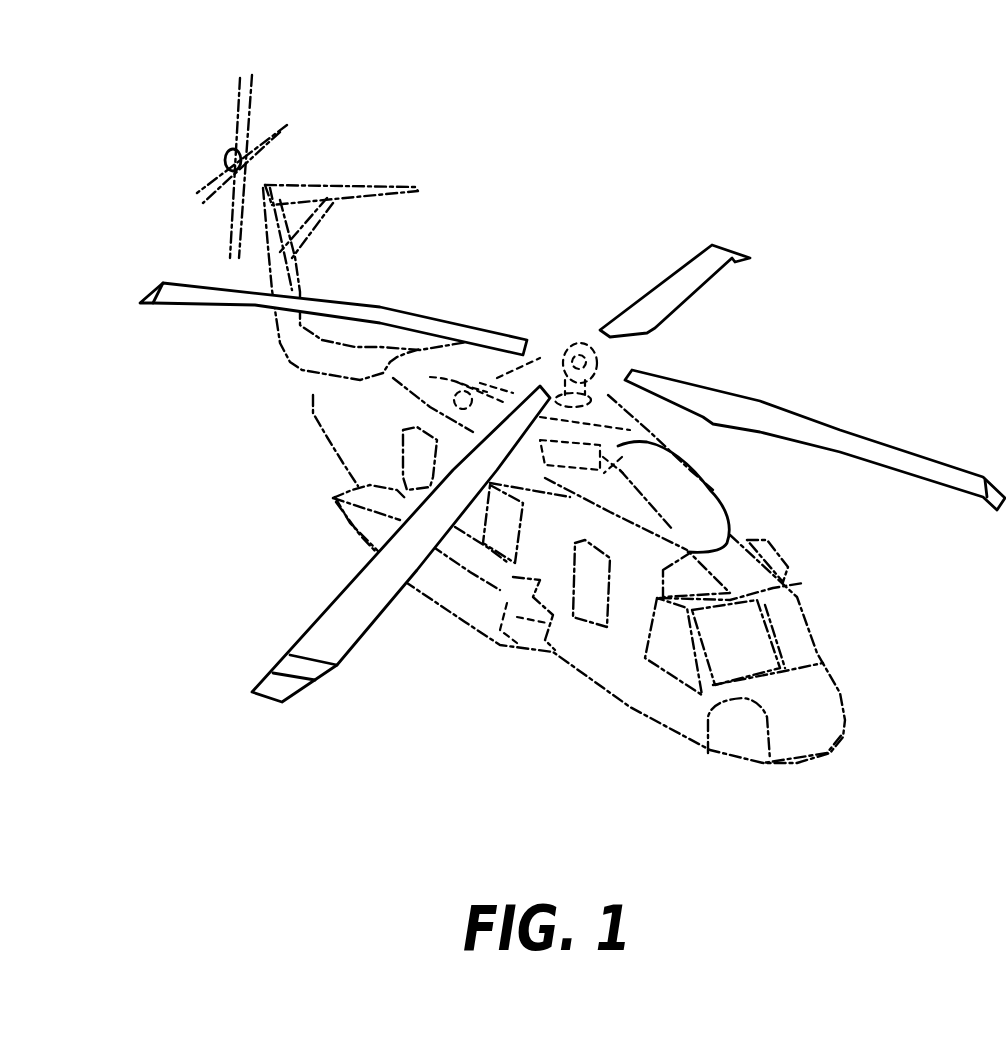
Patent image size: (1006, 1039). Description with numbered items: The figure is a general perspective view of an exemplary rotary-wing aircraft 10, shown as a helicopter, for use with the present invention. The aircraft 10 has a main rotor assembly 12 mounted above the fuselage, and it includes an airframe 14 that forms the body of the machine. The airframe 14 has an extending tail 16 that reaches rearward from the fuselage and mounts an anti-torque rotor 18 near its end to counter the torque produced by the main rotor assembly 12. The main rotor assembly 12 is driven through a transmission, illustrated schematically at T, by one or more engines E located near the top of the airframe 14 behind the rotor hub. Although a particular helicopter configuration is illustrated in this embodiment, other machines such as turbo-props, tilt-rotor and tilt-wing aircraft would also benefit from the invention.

The rotary-wing aircraft 10 is at (718, 337).
The main rotor assembly 12 is at (564, 317).
The airframe 14 is at (490, 643).
The extending tail 16 is at (297, 360).
The anti-torque rotor 18 is at (203, 185).
The engine E is at (459, 383).
The transmission T is at (722, 492).